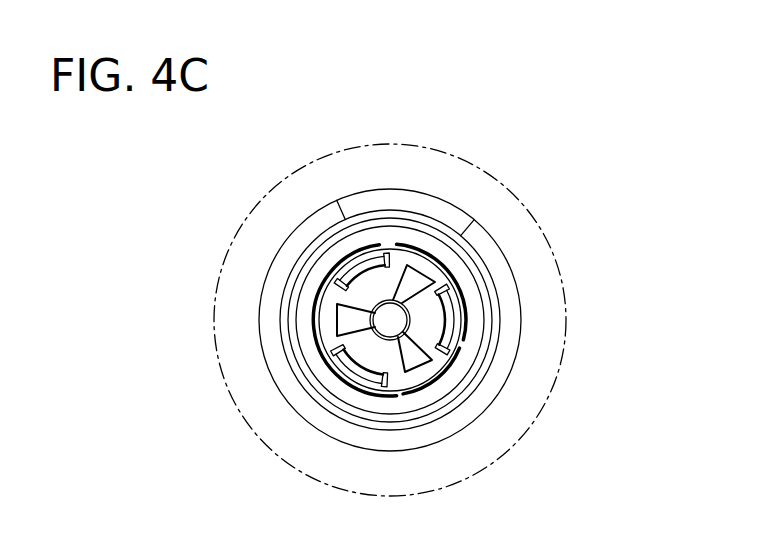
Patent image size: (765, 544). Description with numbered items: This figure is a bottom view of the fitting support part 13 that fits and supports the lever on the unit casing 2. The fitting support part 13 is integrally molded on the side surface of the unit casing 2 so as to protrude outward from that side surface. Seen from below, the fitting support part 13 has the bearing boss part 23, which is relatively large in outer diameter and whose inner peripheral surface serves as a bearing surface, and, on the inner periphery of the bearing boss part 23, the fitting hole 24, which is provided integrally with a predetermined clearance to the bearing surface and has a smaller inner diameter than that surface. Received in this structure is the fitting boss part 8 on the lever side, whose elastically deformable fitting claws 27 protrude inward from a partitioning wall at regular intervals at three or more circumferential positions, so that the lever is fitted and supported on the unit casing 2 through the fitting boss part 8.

The unit casing 2 is at (241, 373).
The fitting boss part 8 is at (372, 256).
The fitting support part 13 is at (513, 355).
The bearing boss part 23 is at (270, 290).
The fitting hole 24 is at (437, 351).
The fitting claws 27 is at (456, 318).